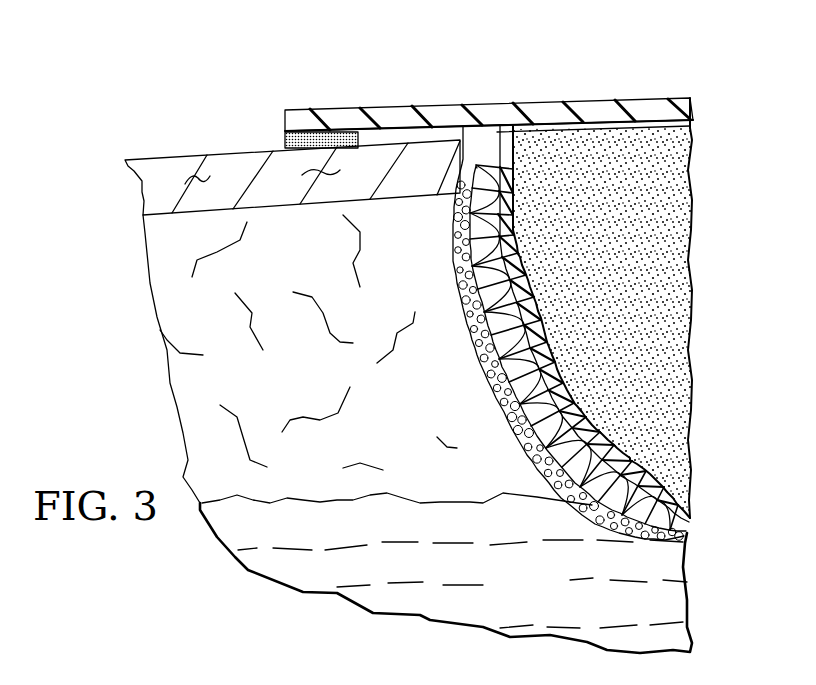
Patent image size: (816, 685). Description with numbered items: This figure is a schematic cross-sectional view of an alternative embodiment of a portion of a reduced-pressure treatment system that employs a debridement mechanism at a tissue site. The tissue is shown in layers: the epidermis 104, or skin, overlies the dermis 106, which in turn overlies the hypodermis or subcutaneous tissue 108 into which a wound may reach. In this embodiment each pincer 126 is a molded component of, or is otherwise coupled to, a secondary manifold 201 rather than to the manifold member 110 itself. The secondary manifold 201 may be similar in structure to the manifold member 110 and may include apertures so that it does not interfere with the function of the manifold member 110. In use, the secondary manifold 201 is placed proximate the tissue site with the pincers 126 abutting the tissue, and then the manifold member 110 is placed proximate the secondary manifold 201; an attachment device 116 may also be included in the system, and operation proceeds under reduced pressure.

The epidermis 104 is at (153, 158).
The dermis 106 is at (316, 390).
The subcutaneous tissue 108 is at (551, 591).
The manifold member 110 is at (626, 282).
The attachment device 116 is at (290, 142).
The pincer 126 is at (457, 231).
The secondary manifold 201 is at (507, 142).